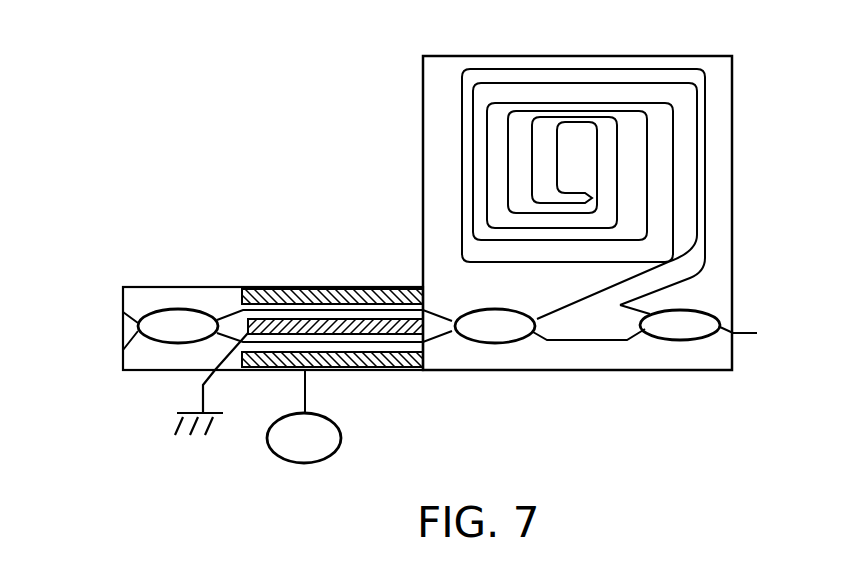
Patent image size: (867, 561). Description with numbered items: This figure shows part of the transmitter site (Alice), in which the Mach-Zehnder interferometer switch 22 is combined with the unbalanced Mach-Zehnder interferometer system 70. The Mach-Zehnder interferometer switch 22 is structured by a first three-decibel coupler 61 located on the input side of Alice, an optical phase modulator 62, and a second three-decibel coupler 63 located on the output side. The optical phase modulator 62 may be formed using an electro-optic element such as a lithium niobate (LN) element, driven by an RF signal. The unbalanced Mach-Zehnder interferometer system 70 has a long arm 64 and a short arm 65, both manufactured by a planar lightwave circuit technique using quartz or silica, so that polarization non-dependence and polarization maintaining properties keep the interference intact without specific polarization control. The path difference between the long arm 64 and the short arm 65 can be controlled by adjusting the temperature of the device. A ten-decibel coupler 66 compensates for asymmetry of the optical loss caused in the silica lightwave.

The Mach-Zehnder interferometer switch 22 is at (168, 197).
The first 3 dB coupler 61 is at (166, 309).
The optical phase modulator 62 is at (299, 333).
The second 3 dB coupler 63 is at (485, 306).
The long arm 64 is at (583, 194).
The short arm 65 is at (589, 326).
The 10 dB coupler 66 is at (700, 311).
The unbalanced Mach-Zehnder interferometer system 70 is at (613, 477).